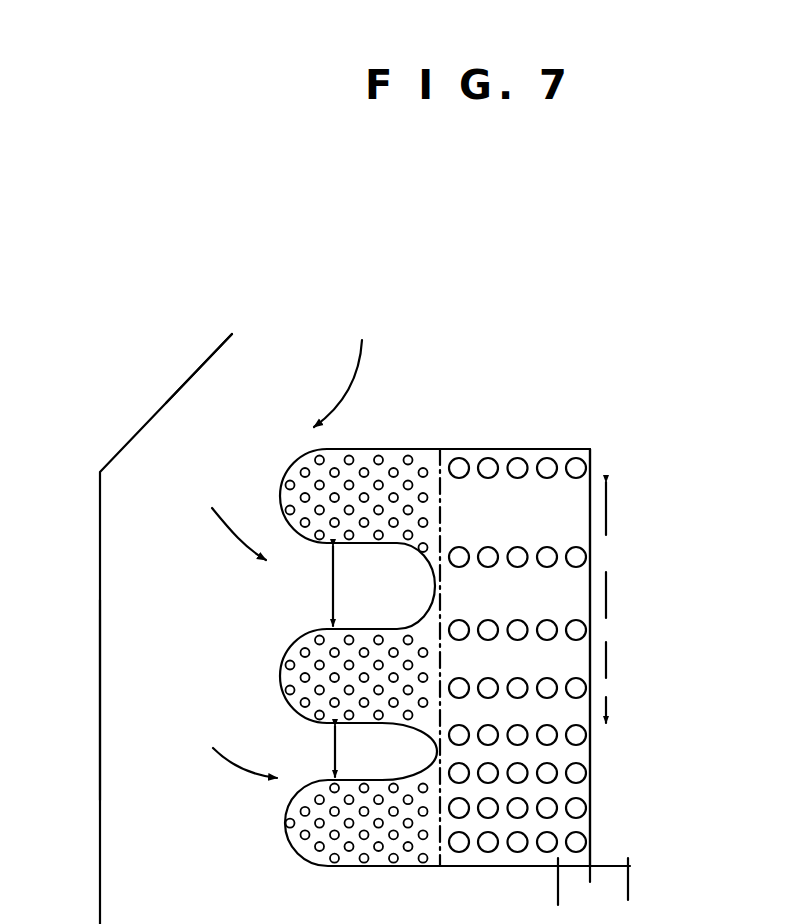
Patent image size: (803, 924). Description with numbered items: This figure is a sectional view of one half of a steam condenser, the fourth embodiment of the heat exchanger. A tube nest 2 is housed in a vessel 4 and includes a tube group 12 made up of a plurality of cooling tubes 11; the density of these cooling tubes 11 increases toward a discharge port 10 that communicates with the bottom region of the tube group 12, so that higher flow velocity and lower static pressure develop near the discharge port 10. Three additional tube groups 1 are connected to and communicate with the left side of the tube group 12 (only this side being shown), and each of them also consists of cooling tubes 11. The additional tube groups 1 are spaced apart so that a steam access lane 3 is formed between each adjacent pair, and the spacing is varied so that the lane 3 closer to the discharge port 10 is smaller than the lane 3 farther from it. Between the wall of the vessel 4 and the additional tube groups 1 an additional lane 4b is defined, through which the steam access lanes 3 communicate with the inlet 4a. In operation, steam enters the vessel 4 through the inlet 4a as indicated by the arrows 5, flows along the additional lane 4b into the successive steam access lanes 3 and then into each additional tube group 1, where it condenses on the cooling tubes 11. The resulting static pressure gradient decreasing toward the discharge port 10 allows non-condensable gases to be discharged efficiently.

The additional tube group 1 is at (290, 470).
The tube nest 2 is at (522, 448).
The steam access lane 3 is at (352, 593).
The vessel 4 is at (100, 620).
The inlet 4a is at (410, 340).
The additional lane 4b is at (128, 702).
The arrows 5 is at (346, 386).
The discharge port 10 is at (612, 882).
The cooling tubes 11 is at (363, 465).
The tube group 12 is at (549, 448).